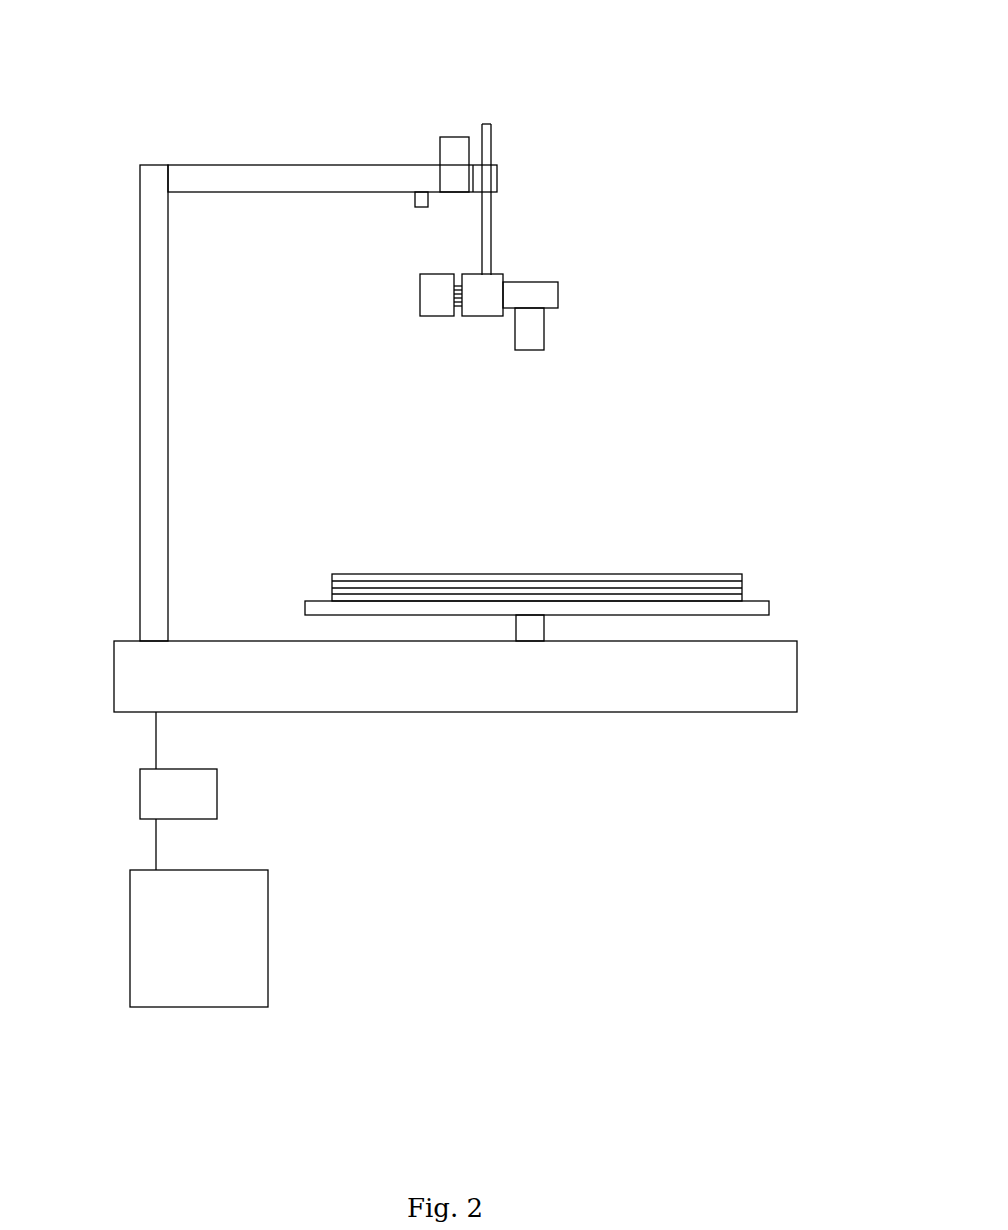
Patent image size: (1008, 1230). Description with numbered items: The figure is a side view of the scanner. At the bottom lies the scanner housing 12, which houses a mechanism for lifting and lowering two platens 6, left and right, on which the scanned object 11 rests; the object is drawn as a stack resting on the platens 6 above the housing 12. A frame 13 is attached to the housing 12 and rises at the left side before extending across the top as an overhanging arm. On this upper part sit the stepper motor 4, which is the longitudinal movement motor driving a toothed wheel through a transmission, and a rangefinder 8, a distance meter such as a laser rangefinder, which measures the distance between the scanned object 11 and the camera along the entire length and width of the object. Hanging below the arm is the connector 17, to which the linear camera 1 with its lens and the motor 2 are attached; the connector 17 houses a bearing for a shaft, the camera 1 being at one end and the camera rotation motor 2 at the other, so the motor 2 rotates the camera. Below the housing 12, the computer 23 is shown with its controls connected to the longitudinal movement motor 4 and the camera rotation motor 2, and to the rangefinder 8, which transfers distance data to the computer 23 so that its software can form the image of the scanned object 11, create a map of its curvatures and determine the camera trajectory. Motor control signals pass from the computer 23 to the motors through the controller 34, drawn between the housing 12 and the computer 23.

The linear camera 1 is at (541, 280).
The motor 2 is at (424, 263).
The stepper motor 4 is at (420, 96).
The platens 6 is at (555, 543).
The rangefinder 8 is at (383, 123).
The scanned object 11 is at (537, 512).
The scanner housing 12 is at (495, 610).
The frame 13 is at (277, 329).
The connector 17 is at (440, 350).
The computer 23 is at (160, 913).
The controller 34 is at (132, 758).